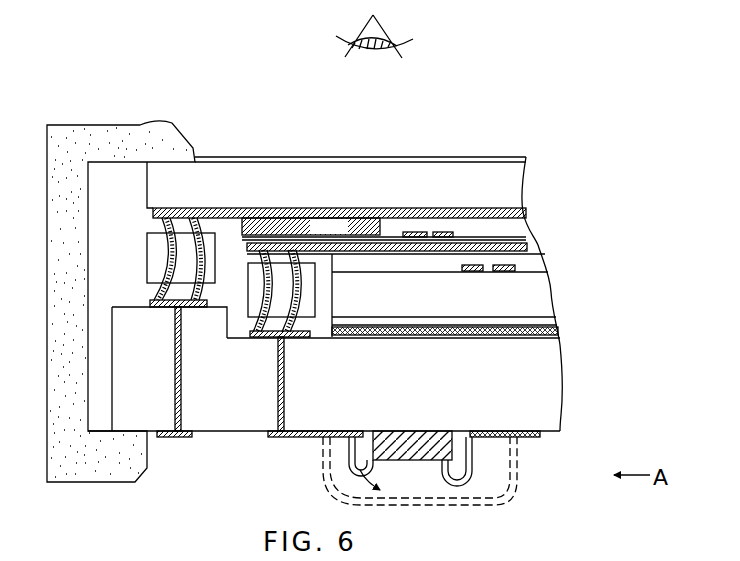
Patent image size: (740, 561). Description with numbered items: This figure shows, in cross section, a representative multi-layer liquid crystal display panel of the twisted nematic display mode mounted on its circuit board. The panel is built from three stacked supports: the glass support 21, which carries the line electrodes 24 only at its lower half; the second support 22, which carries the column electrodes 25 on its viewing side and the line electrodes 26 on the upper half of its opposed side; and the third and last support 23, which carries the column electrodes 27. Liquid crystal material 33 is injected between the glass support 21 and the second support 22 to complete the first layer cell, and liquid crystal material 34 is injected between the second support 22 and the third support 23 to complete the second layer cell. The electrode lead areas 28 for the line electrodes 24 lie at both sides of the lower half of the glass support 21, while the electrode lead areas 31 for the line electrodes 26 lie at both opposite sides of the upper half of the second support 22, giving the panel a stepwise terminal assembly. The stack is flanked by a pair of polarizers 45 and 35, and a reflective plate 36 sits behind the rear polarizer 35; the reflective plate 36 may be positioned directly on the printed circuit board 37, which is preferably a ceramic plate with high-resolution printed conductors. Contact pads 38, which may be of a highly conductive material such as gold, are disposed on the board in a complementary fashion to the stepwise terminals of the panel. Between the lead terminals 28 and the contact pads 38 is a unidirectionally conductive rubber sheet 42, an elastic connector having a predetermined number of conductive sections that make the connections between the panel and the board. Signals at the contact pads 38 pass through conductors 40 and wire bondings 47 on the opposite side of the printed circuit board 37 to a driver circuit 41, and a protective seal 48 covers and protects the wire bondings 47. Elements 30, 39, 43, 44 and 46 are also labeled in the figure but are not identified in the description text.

The glass support 21 is at (480, 172).
The second support 22 is at (522, 241).
The third support 23 is at (444, 301).
The line electrodes 24 is at (518, 213).
The column electrodes 25 is at (418, 228).
The line electrodes 26 is at (520, 245).
The column electrodes 27 is at (515, 262).
The electrode lead areas 28 is at (220, 210).
The spacer 30 is at (311, 246).
The electrode lead areas 31 is at (296, 250).
The liquid crystal material 33 is at (384, 234).
The liquid crystal material 34 is at (440, 294).
The polarizer 35 is at (558, 324).
The reflective plate 36 is at (560, 339).
The printed circuit board 37 is at (553, 392).
The contact pads 38 is at (157, 307).
The conductive plate 39 is at (308, 382).
The conductors 40 is at (185, 428).
The driver circuit 41 is at (450, 445).
The unidirectionally conductive rubber sheet 42 is at (153, 265).
The spring contact 43 is at (158, 224).
The wall 44 is at (100, 484).
The polarizer 45 is at (527, 163).
The section symbol 46 is at (415, 50).
The wire bondings 47 is at (420, 470).
The protective seal 48 is at (495, 502).